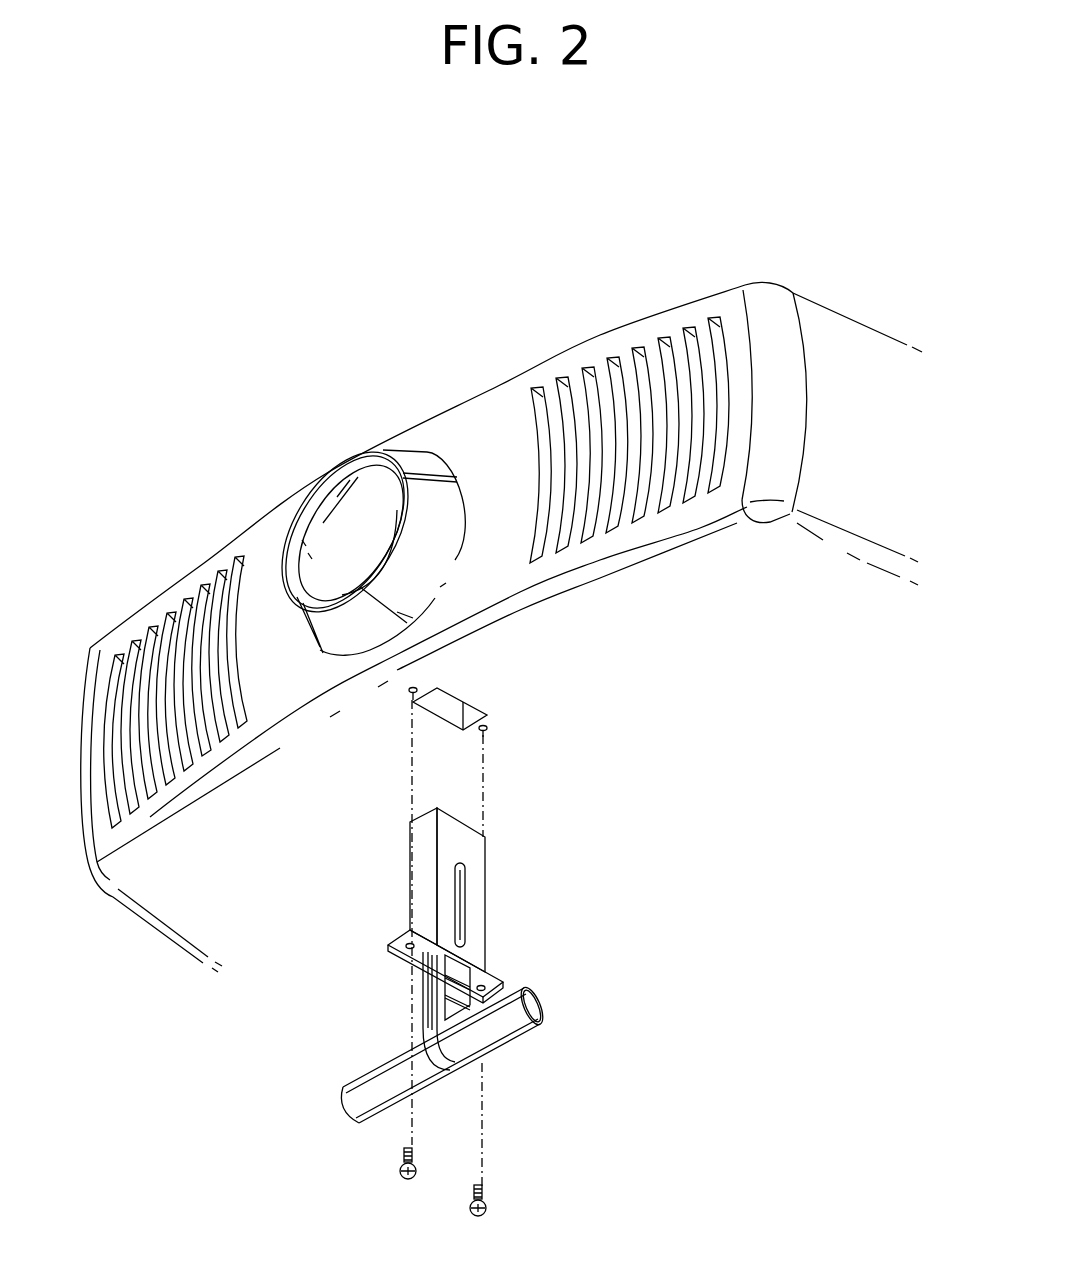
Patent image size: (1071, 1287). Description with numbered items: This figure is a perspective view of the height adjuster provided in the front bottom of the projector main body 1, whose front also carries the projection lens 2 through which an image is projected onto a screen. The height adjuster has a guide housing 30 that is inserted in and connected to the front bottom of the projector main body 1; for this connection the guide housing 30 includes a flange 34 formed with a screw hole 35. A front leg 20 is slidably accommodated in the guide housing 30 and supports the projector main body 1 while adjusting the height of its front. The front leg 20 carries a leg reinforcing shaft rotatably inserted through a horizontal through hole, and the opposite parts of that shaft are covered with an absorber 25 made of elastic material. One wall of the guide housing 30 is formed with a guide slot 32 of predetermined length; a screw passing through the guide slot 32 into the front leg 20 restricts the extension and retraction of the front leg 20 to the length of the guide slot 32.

The projector main body 1 is at (128, 476).
The projection lens 2 is at (352, 510).
The front leg 20 is at (439, 1037).
The absorber 25 is at (480, 1060).
The guide housing 30 is at (441, 938).
The guide slot 32 is at (468, 872).
The flange 34 is at (487, 972).
The screw hole 35 is at (418, 950).